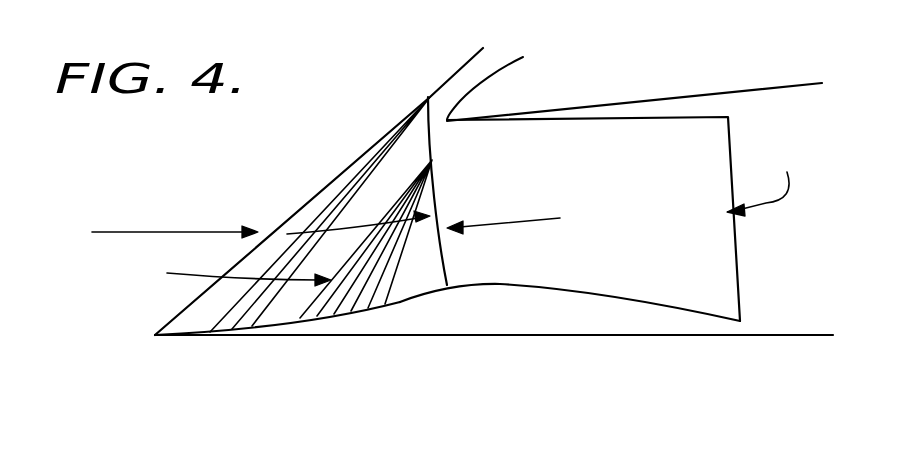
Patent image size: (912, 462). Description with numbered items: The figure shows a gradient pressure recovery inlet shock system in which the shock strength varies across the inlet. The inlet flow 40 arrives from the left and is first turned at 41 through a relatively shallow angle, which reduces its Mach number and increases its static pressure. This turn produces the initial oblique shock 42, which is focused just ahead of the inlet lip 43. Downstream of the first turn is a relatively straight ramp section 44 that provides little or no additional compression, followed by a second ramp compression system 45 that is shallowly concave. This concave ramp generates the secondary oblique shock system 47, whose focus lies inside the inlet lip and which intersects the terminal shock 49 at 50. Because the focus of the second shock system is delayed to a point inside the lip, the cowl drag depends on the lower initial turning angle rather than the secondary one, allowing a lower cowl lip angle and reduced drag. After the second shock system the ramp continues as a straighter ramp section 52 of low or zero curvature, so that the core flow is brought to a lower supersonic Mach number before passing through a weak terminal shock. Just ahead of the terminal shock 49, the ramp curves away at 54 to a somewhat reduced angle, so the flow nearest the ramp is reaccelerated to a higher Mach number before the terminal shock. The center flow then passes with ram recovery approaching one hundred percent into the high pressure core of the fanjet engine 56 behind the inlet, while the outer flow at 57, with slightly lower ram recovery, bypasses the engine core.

The inlet flow 40 is at (140, 231).
The initial turning point 41 is at (225, 333).
The initial oblique shock 42 is at (358, 160).
The inlet lip 43 is at (506, 71).
The straight ramp section 44 is at (283, 323).
The second ramp compression system 45 is at (347, 315).
The secondary oblique shock system 47 is at (228, 274).
The terminal shock 49 is at (525, 216).
The intersection point 50 is at (432, 162).
The straighter ramp section 52 is at (398, 300).
The curved-away ramp portion 54 is at (425, 291).
The fanjet engine 56 is at (638, 202).
The outer flow 57 is at (336, 230).